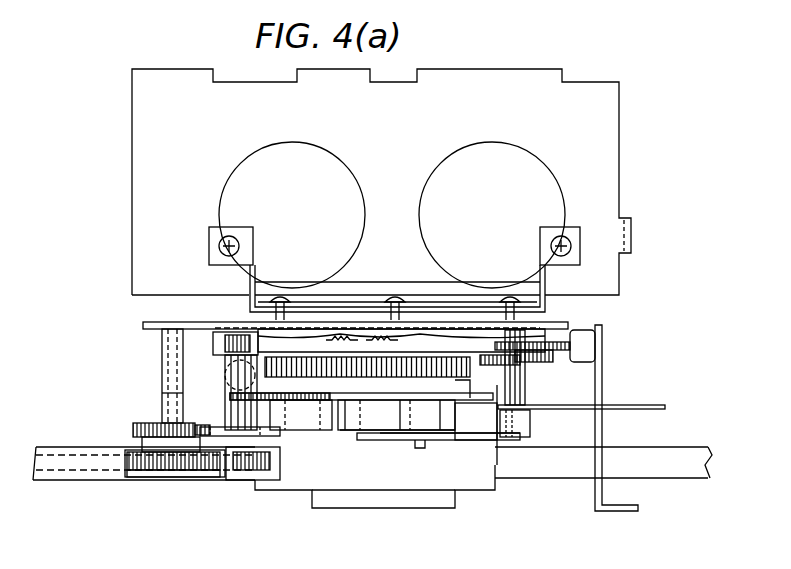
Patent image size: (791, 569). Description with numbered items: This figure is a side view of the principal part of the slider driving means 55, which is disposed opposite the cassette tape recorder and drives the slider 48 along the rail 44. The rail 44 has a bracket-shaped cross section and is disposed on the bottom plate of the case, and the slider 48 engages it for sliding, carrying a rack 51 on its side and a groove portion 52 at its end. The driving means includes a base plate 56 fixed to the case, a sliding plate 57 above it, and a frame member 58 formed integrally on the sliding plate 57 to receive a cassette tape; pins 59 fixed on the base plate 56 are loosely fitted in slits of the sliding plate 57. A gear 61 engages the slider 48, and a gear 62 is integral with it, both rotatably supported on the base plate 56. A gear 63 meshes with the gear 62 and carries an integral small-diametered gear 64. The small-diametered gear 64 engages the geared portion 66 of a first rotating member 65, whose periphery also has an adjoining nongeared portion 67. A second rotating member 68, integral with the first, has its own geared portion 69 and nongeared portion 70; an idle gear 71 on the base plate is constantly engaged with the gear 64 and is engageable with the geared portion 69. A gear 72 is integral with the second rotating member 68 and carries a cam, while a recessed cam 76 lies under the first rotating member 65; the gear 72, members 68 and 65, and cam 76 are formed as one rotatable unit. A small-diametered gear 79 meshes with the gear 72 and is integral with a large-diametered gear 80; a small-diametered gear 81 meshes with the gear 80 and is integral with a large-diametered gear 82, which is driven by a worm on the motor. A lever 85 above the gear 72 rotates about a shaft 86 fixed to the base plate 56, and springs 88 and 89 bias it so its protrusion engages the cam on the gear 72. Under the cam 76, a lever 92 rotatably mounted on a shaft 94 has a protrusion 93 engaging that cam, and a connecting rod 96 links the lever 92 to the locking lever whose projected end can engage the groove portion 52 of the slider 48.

The rail 44 is at (683, 452).
The slider 48 is at (97, 460).
The rack 51 is at (212, 470).
The groove portion 52 is at (248, 470).
The slider driving means 55 is at (132, 344).
The base plate 56 is at (562, 318).
The sliding plate 57 is at (470, 306).
The frame member 58 is at (620, 162).
The pins 59 is at (280, 298).
The gear 61 is at (178, 474).
The gear 62 is at (140, 423).
The gear 63 is at (270, 482).
The small-diametered gear 64 is at (232, 408).
The first rotating member 65 is at (350, 455).
The geared portion 66 is at (288, 412).
The nongeared portion 67 is at (430, 410).
The second rotating member 68 is at (395, 410).
The geared portion 69 is at (476, 425).
The nongeared portion 70 is at (330, 402).
The idle gear 71 is at (232, 360).
The gear 72 is at (458, 385).
The recessed cam 76 is at (320, 488).
The small-diametered gear 79 is at (515, 380).
The large-diametered gear 80 is at (505, 363).
The small-diametered gear 81 is at (596, 352).
The large-diametered gear 82 is at (580, 345).
The lever 85 is at (203, 322).
The shaft 86 is at (238, 332).
The spring 88 is at (345, 335).
The spring 89 is at (383, 335).
The lever 92 is at (410, 442).
The protrusion 93 is at (365, 444).
The shaft 94 is at (510, 438).
The connecting rod 96 is at (648, 405).